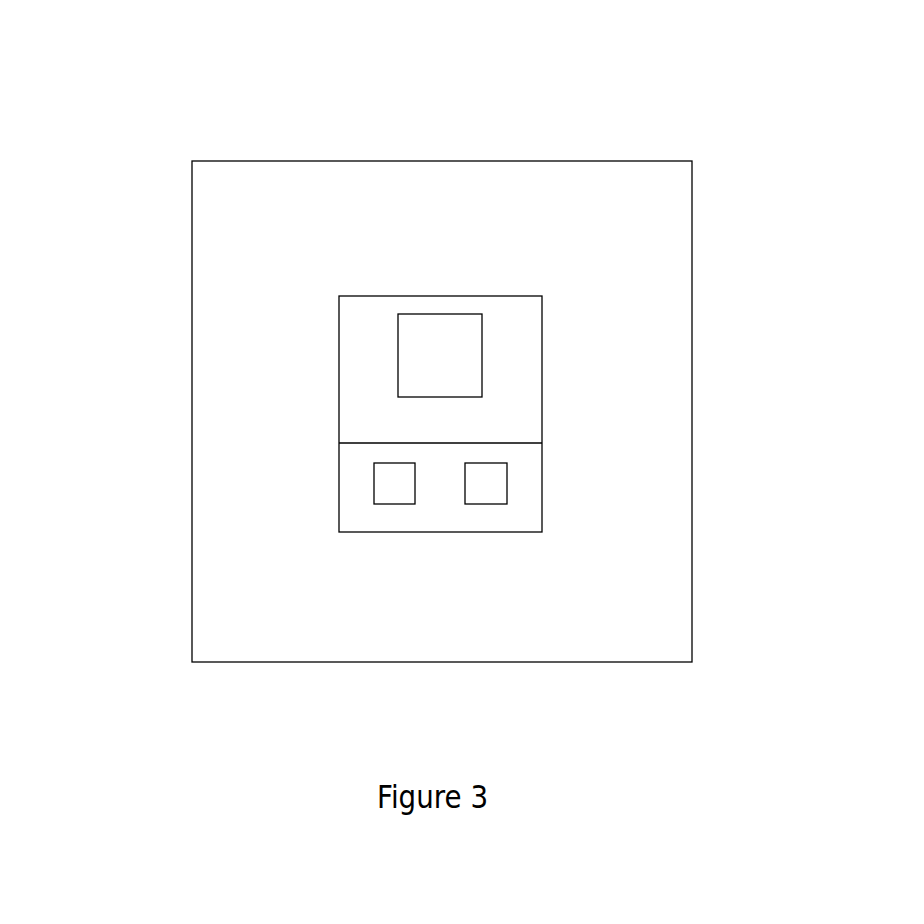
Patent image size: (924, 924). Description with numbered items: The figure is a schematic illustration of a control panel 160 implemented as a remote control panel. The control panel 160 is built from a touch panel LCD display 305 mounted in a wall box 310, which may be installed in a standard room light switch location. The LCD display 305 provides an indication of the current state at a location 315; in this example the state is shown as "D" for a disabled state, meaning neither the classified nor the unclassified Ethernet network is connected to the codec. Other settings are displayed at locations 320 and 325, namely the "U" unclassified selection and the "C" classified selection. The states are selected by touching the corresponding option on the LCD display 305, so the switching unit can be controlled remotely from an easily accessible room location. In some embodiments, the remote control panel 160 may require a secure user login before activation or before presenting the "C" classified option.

The control panel 160 is at (830, 84).
The wall box 310 is at (692, 430).
The touch panel LCD display 305 is at (542, 400).
The location 315 is at (482, 343).
The location 320 is at (374, 487).
The location 325 is at (507, 483).